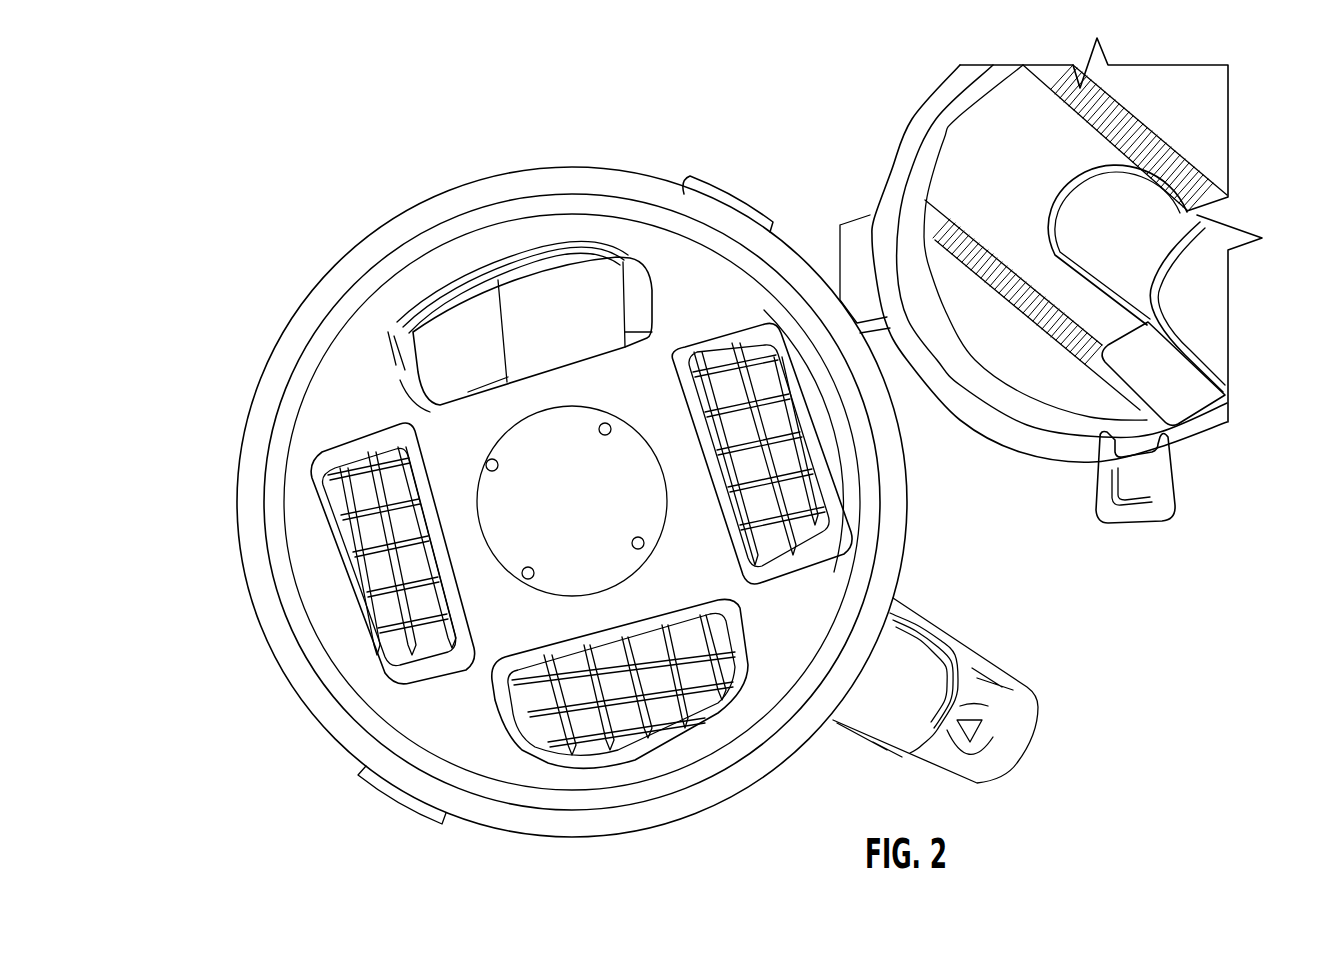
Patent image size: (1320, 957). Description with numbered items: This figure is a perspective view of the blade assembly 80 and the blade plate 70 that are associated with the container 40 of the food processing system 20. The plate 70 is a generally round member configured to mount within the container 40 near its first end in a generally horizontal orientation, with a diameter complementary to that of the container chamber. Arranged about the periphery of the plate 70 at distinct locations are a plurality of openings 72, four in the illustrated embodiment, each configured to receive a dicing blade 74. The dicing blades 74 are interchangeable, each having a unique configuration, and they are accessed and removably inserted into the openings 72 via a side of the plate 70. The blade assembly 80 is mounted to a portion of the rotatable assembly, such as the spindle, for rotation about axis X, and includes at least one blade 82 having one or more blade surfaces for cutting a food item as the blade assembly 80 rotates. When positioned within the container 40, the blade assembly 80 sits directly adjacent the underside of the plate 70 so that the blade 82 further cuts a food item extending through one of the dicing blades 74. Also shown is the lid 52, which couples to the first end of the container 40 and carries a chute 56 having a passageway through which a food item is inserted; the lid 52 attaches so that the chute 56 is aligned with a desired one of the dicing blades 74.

The food processing system 20 is at (249, 106).
The container 40 is at (450, 815).
The lid 52 is at (1103, 88).
The chute 56 is at (1203, 318).
The plate 70 is at (672, 250).
The openings 72 is at (470, 305).
The dicing blades 74 is at (345, 530).
The blade assembly 80 is at (583, 240).
The blade 82 is at (590, 322).